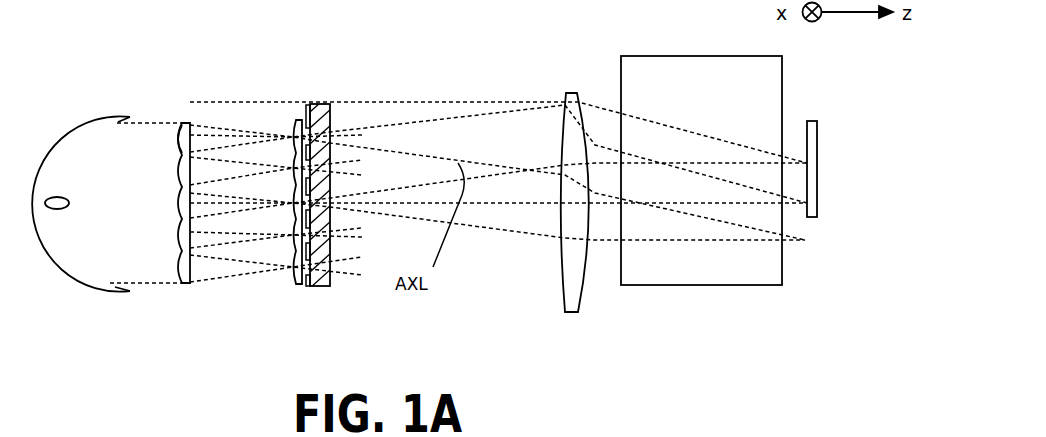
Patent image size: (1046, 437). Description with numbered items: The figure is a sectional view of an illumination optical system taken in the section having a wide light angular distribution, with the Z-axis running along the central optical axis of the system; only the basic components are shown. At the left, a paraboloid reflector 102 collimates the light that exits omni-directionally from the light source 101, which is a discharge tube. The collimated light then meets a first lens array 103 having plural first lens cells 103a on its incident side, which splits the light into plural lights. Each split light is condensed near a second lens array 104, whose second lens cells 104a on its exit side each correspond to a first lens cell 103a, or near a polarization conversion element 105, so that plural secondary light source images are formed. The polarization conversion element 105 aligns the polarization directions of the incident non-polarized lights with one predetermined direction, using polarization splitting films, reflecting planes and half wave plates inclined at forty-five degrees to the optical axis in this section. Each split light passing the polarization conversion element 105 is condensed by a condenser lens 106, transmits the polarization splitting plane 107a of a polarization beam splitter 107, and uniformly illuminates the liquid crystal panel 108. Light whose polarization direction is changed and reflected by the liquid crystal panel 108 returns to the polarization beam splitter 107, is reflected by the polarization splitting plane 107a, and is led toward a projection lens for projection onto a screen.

The light source 101 is at (55, 167).
The paraboloid reflector 102 is at (87, 238).
The first lens array 103 is at (185, 240).
The first lens cell 103a is at (178, 102).
The second lens array 104 is at (298, 240).
The second lens cell 104a is at (310, 133).
The polarization conversion element 105 is at (323, 290).
The condenser lens 106 is at (570, 268).
The polarization beam splitter 107 is at (655, 268).
The polarization splitting plane 107a is at (695, 436).
The liquid crystal panel 108 is at (813, 213).